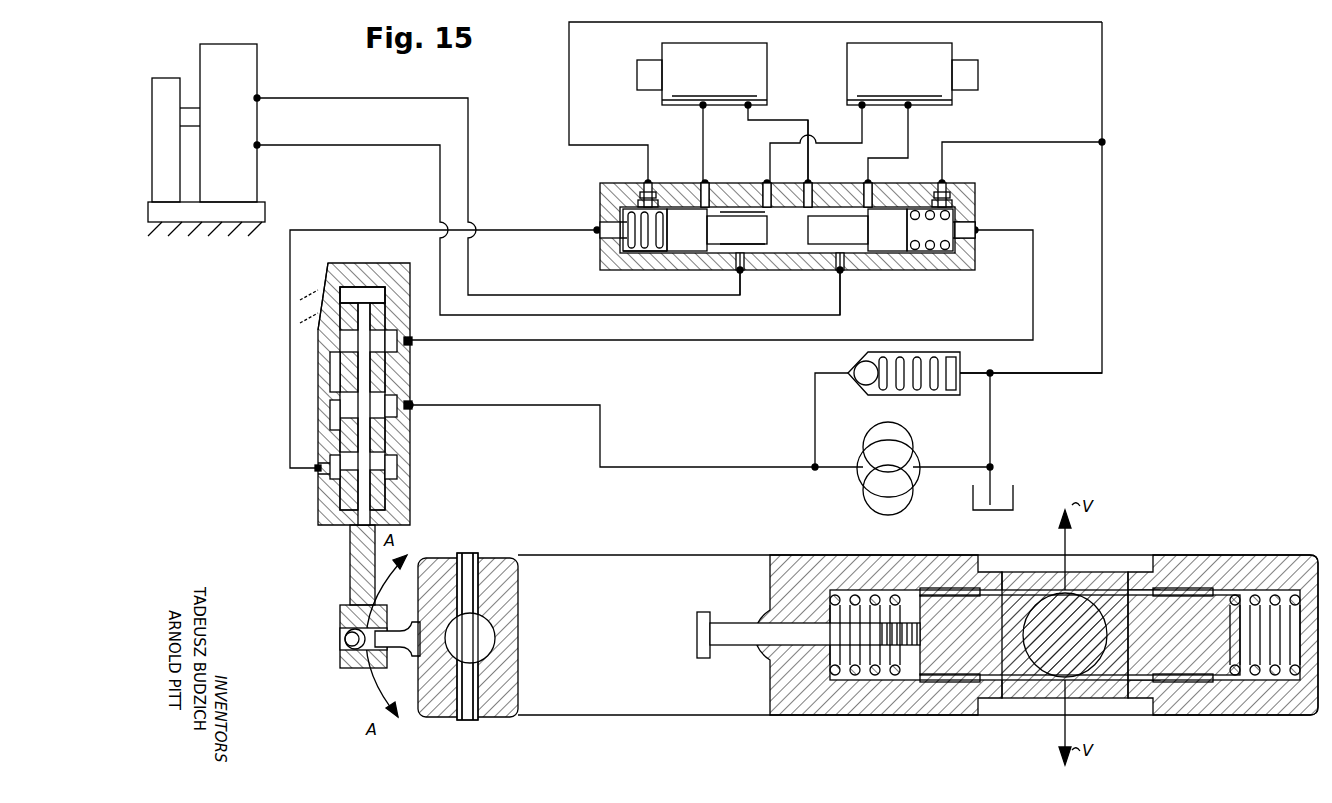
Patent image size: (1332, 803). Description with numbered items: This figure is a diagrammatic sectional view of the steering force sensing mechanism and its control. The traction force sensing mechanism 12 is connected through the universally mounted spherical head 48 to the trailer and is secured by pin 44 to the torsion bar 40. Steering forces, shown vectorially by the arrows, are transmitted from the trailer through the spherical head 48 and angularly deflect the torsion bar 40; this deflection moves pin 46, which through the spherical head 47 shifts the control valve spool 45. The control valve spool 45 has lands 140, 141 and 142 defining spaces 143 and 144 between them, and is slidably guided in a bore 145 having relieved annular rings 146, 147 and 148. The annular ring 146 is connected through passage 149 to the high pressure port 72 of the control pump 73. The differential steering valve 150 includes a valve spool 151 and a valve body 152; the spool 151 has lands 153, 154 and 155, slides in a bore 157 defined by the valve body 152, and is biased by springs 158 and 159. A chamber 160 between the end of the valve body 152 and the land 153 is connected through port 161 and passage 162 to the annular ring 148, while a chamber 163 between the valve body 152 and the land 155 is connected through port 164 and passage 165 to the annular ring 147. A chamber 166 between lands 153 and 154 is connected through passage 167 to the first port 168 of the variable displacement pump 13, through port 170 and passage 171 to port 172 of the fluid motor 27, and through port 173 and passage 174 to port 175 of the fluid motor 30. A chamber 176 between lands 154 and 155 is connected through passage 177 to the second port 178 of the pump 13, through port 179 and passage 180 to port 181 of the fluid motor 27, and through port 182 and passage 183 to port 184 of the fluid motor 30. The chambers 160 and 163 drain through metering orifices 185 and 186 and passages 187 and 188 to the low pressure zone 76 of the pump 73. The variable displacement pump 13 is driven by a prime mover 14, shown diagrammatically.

The traction force sensing mechanism 12 is at (778, 717).
The variable displacement pump 13 is at (248, 60).
The prime mover 14 is at (156, 78).
The fluid motor 27 is at (767, 66).
The fluid motor 30 is at (855, 62).
The torsion bar 40 is at (495, 637).
The pin 44 is at (470, 720).
The control valve spool 45 is at (352, 668).
The pin 46 is at (398, 631).
The spherical head 47 is at (345, 640).
The spherical head 48 is at (1078, 600).
The high pressure port 72 is at (865, 480).
The control pump 73 is at (905, 440).
The low pressure zone 76 is at (1008, 485).
The land 140 is at (318, 495).
The land 141 is at (330, 412).
The land 142 is at (318, 300).
The space 143 is at (330, 372).
The space 144 is at (330, 466).
The bore 145 is at (365, 287).
The annular ring 146 is at (397, 400).
The annular ring 147 is at (397, 340).
The annular ring 148 is at (397, 468).
The passage 149 is at (555, 405).
The differential steering valve 150 is at (600, 196).
The valve spool 151 is at (735, 215).
The valve body 152 is at (762, 212).
The land 153 is at (685, 250).
The land 154 is at (828, 250).
The land 155 is at (888, 250).
The bore 157 is at (845, 260).
The spring 158 is at (635, 253).
The spring 159 is at (950, 252).
The chamber 160 is at (615, 235).
The port 161 is at (612, 226).
The passage 162 is at (500, 230).
The chamber 163 is at (958, 232).
The port 164 is at (968, 222).
The passage 165 is at (1033, 300).
The chamber 166 is at (745, 260).
The passage 167 is at (575, 295).
The first port 168 is at (258, 97).
The port 170 is at (703, 190).
The passage 171 is at (703, 140).
The port 172 is at (700, 108).
The port 173 is at (770, 183).
The passage 174 is at (848, 143).
The port 175 is at (860, 108).
The chamber 176 is at (812, 195).
The passage 177 is at (780, 315).
The second port 178 is at (258, 144).
The port 179 is at (812, 150).
The passage 180 is at (790, 120).
The port 181 is at (748, 108).
The port 182 is at (870, 185).
The passage 183 is at (910, 138).
The port 184 is at (912, 106).
The metering orifice 185 is at (640, 183).
The metering orifice 186 is at (946, 183).
The passage 187 is at (569, 110).
The passage 188 is at (1040, 142).